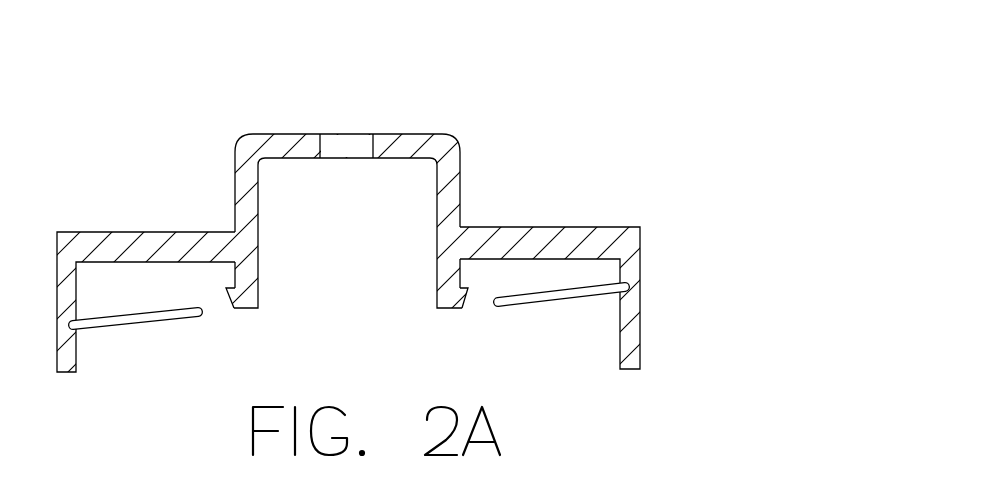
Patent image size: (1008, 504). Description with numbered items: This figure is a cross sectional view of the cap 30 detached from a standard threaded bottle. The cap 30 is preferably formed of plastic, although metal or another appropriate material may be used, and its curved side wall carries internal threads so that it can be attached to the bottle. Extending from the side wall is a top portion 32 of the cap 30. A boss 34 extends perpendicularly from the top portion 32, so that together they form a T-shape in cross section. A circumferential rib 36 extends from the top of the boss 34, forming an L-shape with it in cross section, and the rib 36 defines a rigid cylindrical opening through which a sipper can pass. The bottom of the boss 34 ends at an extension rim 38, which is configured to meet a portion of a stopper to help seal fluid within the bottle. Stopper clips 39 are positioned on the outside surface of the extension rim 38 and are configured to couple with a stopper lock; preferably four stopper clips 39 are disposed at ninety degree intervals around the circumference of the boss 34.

The cap 30 is at (448, 196).
The top portion 32 is at (573, 237).
The boss 34 is at (450, 190).
The circumferential rib 36 is at (425, 134).
The extension rim 38 is at (445, 253).
The stopper clips 39 is at (463, 293).